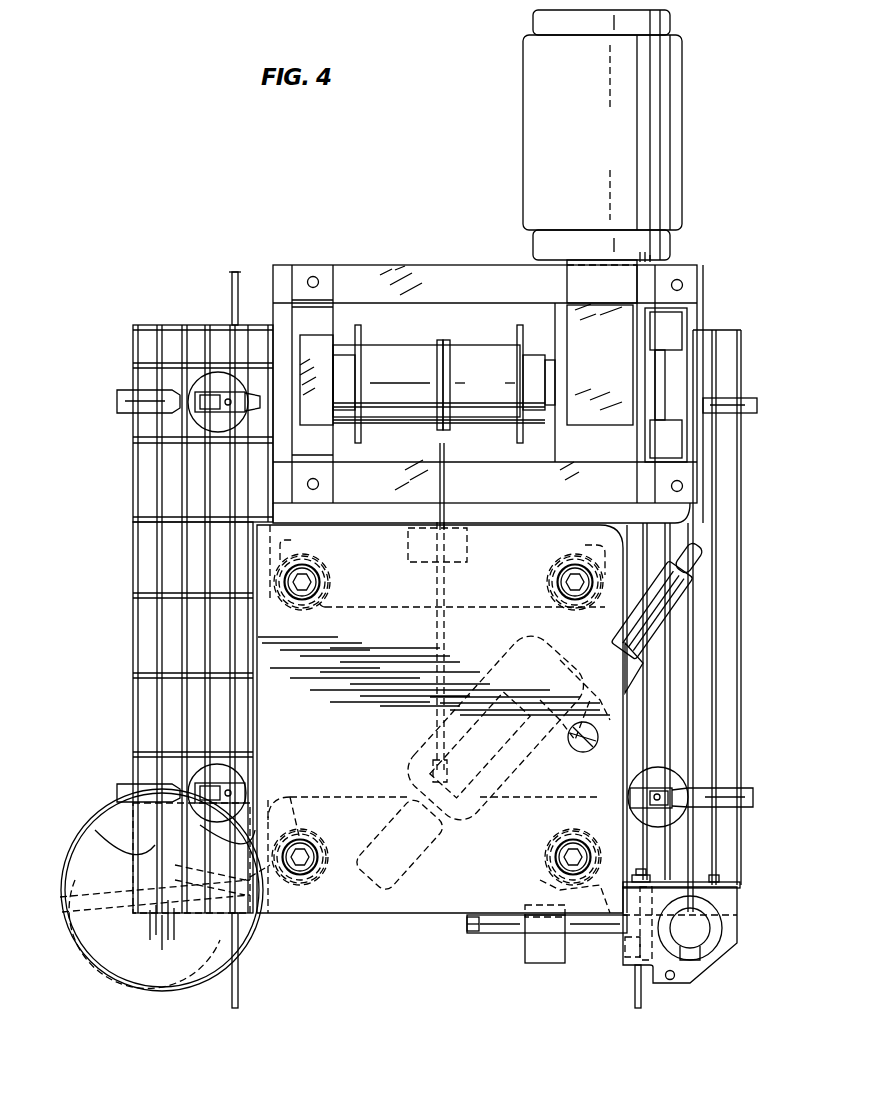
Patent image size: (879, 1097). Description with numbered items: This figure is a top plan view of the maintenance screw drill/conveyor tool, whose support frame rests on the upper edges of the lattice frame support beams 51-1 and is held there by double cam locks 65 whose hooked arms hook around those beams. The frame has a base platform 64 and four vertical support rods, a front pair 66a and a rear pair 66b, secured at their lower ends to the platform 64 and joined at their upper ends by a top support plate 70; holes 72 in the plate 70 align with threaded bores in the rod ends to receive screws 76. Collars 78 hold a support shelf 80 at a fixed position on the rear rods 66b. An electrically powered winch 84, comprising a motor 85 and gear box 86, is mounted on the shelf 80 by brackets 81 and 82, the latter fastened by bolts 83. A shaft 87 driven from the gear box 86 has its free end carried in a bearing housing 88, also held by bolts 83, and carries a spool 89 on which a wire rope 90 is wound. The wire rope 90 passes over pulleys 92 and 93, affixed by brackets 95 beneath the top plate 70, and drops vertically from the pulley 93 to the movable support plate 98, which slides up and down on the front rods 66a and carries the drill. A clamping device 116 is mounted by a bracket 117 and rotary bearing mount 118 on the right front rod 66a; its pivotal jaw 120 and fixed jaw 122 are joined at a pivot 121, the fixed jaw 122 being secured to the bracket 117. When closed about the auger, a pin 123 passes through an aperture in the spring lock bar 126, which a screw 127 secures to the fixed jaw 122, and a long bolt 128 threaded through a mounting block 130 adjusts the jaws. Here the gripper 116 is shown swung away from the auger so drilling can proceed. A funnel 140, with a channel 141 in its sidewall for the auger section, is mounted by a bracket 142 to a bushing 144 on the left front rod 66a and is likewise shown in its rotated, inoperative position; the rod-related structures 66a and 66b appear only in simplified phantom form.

The lattice frame support beams 51-1 is at (232, 284).
The base platform 64 is at (134, 544).
The double cam locks 65 is at (132, 393).
The front pair of support rods 66a is at (330, 870).
The rear pair of support rods 66b is at (325, 574).
The top support plate 70 is at (274, 724).
The holes 72 is at (298, 572).
The screws 76 is at (310, 570).
The collars 78 is at (552, 588).
The support shelf 80 is at (280, 270).
The bracket 81 is at (677, 445).
The bracket 82 is at (550, 440).
The bolts 83 is at (313, 276).
The electrically powered winch 84 is at (708, 112).
The motor 85 is at (590, 152).
The gear box 86 is at (592, 362).
The shaft 87 is at (358, 375).
The bearing housing 88 is at (318, 360).
The spool 89 is at (472, 395).
The wire rope 90 is at (443, 485).
The pulley 92 is at (470, 520).
The pulley 93 is at (436, 767).
The brackets 95 is at (470, 547).
The movable support plate 98 is at (337, 800).
The clamping device 116 is at (722, 978).
The bracket 117 is at (520, 930).
The rotary bearing mount 118 is at (540, 852).
The pivotal jaw 120 is at (715, 950).
The pivotal connection 121 is at (676, 980).
The fixed jaw 122 is at (623, 962).
The pin 123 is at (710, 882).
The spring lock bar 126 is at (705, 880).
The screw 127 is at (650, 877).
The long bolt 128 is at (462, 930).
The mounting block 130 is at (548, 942).
The funnel 140 is at (137, 967).
The channel 141 is at (95, 830).
The bracket 142 is at (270, 905).
The bushing 144 is at (305, 795).